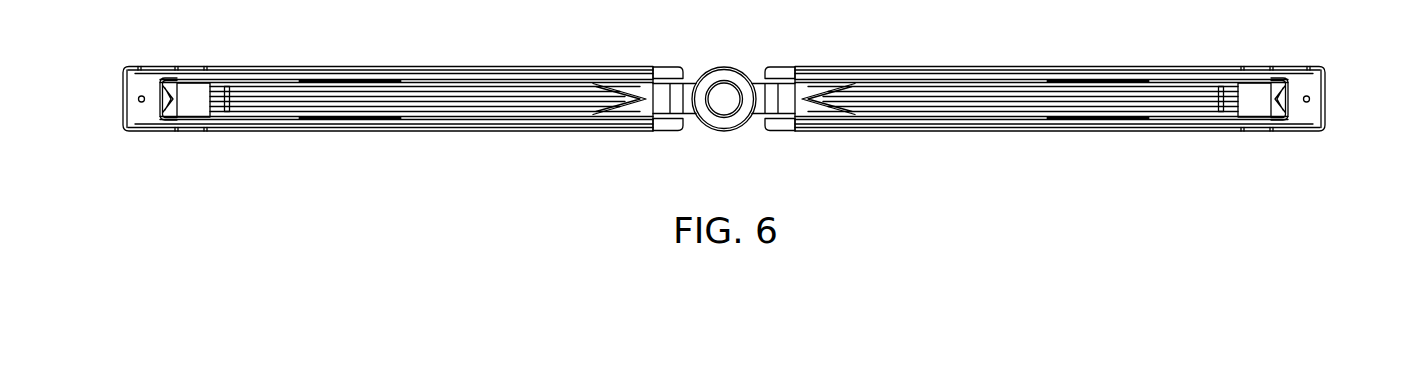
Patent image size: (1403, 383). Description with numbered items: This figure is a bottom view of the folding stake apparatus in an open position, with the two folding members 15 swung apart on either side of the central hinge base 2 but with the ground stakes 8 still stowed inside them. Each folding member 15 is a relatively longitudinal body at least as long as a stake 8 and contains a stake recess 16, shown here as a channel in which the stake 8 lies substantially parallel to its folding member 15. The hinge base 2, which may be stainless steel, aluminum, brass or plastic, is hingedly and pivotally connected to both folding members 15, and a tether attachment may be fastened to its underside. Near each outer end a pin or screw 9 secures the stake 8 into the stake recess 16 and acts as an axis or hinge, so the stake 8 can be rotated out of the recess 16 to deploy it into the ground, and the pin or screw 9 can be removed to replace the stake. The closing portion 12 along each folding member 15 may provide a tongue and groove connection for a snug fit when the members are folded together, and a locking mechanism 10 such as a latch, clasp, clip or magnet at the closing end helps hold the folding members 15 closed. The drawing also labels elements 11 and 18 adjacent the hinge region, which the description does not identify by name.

The hinge base 2 is at (688, 88).
The stake 8 is at (417, 90).
The pin or screw 9 is at (196, 68).
The locking mechanism 10 is at (110, 98).
The hinge arm 11 is at (637, 108).
The closing portion 12 is at (322, 70).
The folding member 15 is at (257, 129).
The stake recess 16 is at (643, 88).
The pivot pin 18 is at (723, 105).